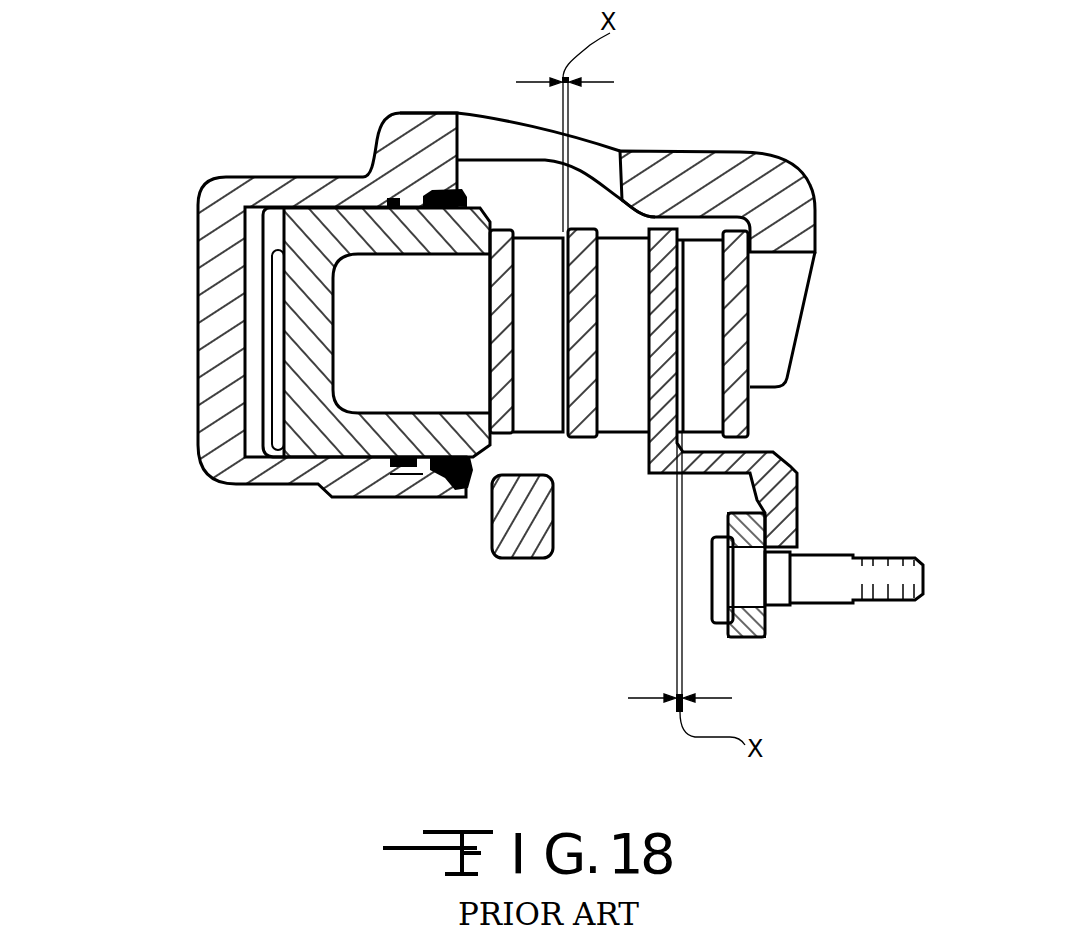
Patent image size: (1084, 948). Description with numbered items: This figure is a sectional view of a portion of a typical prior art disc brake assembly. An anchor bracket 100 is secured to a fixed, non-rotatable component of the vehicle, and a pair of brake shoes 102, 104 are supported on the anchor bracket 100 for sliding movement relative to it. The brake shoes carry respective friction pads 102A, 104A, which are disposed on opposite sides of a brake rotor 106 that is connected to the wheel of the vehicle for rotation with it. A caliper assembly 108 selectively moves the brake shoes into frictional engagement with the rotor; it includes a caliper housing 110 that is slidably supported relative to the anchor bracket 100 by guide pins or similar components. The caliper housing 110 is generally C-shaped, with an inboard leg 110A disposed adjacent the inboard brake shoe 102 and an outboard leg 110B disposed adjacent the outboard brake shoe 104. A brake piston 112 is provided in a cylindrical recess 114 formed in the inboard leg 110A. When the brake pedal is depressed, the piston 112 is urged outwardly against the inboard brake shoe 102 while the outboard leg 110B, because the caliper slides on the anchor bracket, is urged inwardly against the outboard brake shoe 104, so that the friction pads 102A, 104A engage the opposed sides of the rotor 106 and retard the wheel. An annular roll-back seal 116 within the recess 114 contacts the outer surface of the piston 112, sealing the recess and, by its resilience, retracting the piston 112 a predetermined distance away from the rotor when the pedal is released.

The anchor bracket 100 is at (490, 563).
The brake shoe 102 is at (534, 385).
The friction pad 102A is at (537, 250).
The brake shoe 104 is at (782, 271).
The friction pad 104A is at (707, 334).
The brake rotor 106 is at (662, 485).
The caliper assembly 108 is at (380, 110).
The caliper housing 110 is at (430, 140).
The inboard leg 110A is at (237, 202).
The outboard leg 110B is at (816, 193).
The brake piston 112 is at (300, 409).
The cylindrical recess 114 is at (315, 450).
The roll-back seal 116 is at (403, 470).